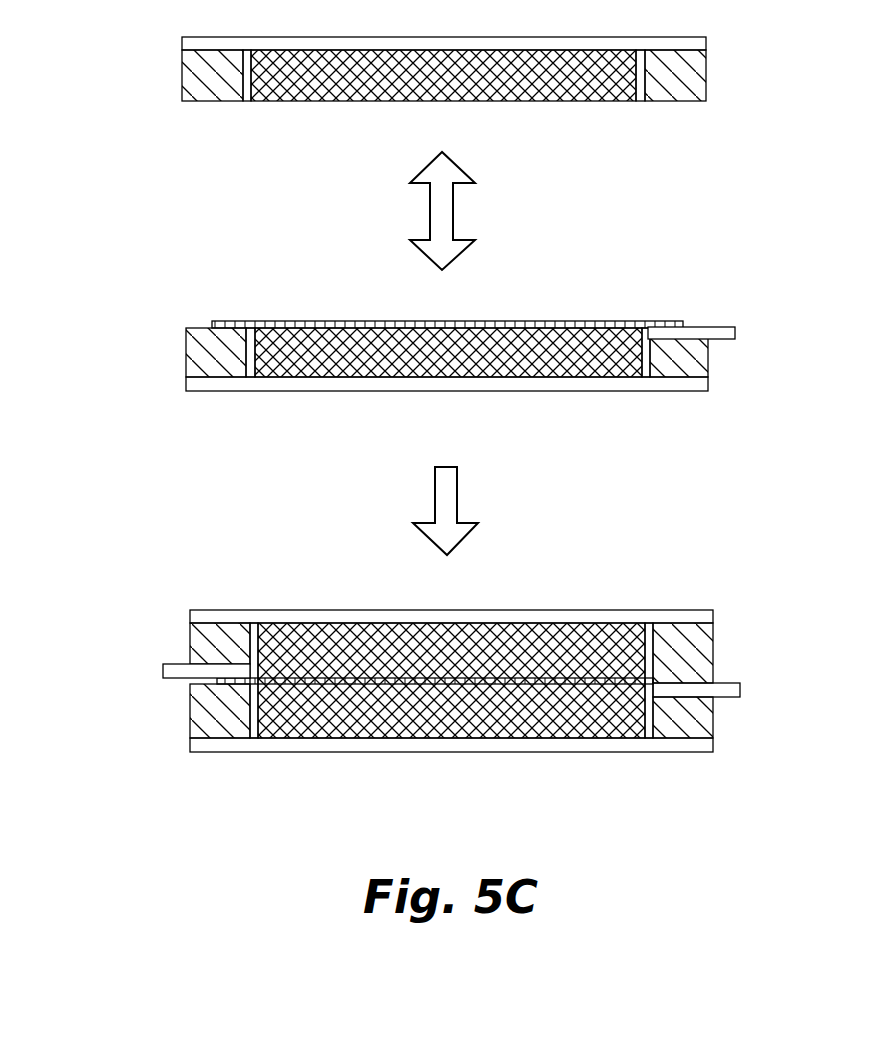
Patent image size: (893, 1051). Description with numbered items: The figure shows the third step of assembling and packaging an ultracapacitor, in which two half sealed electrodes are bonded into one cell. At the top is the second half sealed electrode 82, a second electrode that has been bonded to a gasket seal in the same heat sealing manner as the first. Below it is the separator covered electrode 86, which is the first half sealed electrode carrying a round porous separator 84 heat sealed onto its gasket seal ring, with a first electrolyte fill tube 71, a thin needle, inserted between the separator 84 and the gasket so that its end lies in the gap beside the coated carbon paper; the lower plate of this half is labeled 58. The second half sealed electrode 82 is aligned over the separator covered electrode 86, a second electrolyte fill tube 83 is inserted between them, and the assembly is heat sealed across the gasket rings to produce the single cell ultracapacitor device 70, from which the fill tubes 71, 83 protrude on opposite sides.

The second half sealed electrode 82 is at (160, 79).
The separator covered electrode 86 is at (436, 497).
The porous separator 84 is at (220, 321).
The first electrolyte fill tube 71 is at (725, 339).
The bottom plate 58 is at (630, 391).
The second electrolyte fill tube 83 is at (180, 679).
The single cell ultracapacitor device 70 is at (433, 722).